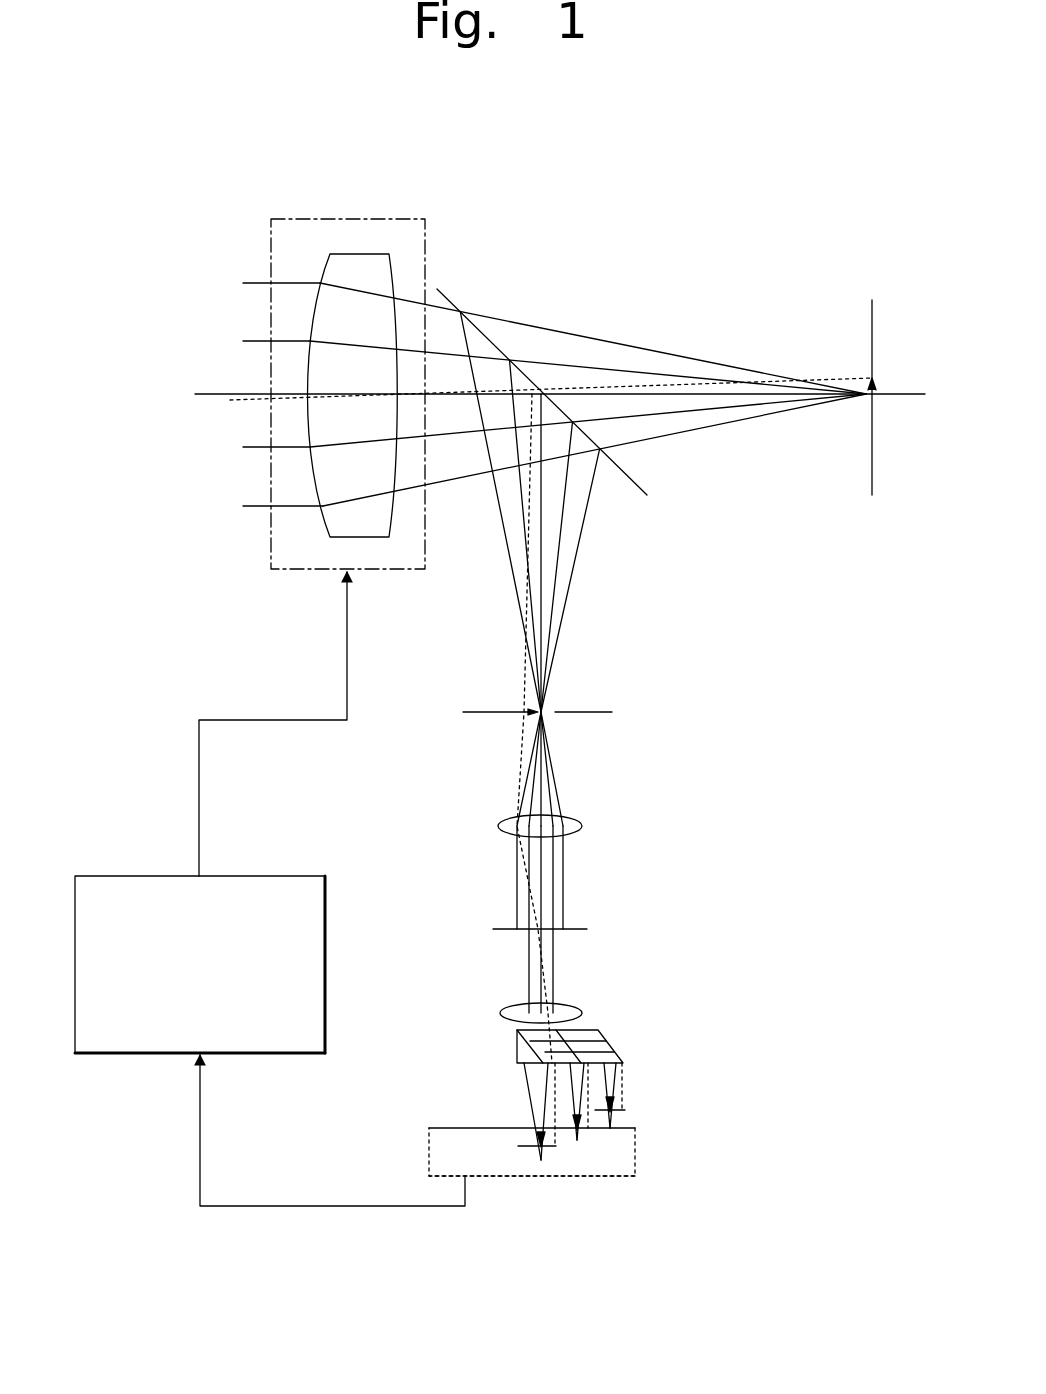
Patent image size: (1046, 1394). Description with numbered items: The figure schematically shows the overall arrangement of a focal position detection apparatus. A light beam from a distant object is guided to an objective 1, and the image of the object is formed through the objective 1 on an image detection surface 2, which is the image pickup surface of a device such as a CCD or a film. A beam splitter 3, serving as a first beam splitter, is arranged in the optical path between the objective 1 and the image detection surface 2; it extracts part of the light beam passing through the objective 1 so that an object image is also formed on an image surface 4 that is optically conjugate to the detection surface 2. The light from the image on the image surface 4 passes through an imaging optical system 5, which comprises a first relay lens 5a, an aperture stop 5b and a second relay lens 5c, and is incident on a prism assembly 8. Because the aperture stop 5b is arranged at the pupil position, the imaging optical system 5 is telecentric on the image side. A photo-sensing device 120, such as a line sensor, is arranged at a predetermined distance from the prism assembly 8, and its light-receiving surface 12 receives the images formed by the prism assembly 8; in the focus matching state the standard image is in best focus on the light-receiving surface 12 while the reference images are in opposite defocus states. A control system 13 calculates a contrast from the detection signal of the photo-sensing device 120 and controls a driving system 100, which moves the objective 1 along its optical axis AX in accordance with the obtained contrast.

The objective 1 is at (355, 254).
The driving system 100 is at (265, 490).
The optical axis AX is at (205, 394).
The image detection surface 2 is at (872, 311).
The beam splitter 3 is at (437, 289).
The image surface 4 is at (593, 712).
The imaging optical system 5 is at (542, 917).
The first relay lens 5a is at (582, 826).
The aperture stop 5b is at (577, 929).
The second relay lens 5c is at (577, 1009).
The prism assembly 8 is at (602, 1030).
The light-receiving surface 12 is at (638, 1131).
The photo-sensing device 120 is at (590, 1180).
The control system 13 is at (109, 876).